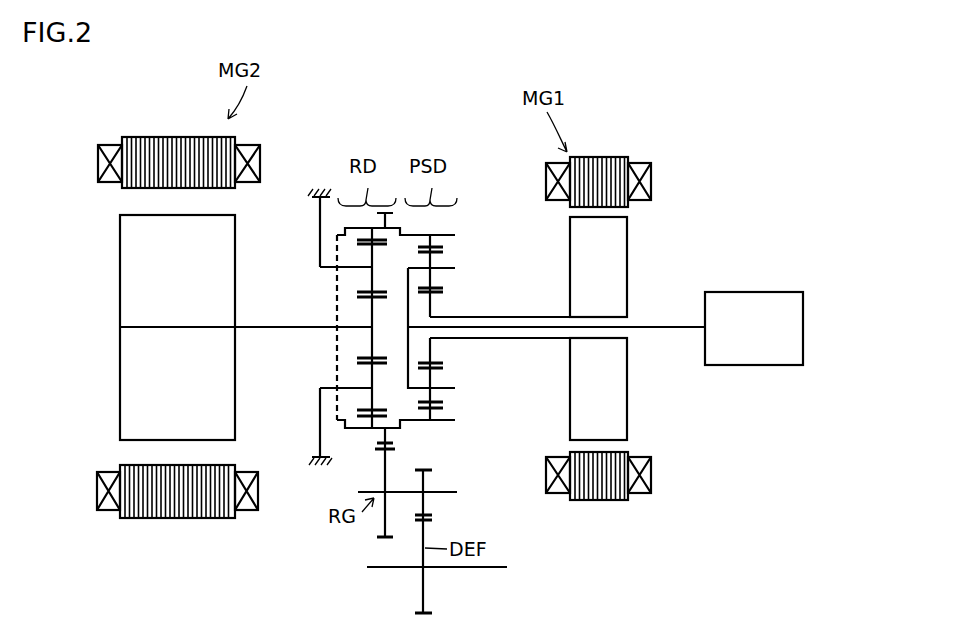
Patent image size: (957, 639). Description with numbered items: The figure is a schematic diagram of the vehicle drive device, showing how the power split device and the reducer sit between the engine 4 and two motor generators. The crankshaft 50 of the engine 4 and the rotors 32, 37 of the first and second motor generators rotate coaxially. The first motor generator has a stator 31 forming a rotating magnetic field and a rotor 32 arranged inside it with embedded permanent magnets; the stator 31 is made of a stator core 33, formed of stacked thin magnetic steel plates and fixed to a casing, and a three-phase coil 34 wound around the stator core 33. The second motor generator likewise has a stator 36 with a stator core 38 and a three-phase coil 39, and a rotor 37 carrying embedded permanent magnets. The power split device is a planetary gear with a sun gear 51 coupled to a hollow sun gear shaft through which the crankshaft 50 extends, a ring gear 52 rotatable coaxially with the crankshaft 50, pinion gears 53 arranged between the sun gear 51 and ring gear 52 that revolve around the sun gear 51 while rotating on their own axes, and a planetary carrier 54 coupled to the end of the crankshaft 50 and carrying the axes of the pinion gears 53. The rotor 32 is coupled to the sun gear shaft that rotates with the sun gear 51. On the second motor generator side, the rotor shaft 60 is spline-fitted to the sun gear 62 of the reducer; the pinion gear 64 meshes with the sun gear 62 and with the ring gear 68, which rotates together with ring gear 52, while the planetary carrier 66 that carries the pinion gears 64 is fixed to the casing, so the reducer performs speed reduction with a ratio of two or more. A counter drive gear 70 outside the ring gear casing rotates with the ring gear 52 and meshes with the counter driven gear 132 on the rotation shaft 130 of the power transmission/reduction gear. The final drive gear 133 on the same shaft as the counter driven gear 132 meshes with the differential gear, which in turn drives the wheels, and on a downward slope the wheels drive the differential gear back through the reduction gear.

The engine 4 is at (787, 292).
The stator 31 is at (667, 486).
The rotor 32 is at (627, 265).
The stator core 33 is at (598, 155).
The three-phase coil 34 is at (641, 161).
The stator 36 is at (273, 502).
The rotor 37 is at (120, 248).
The stator core 38 is at (146, 137).
The three-phase coil 39 is at (108, 143).
The crankshaft 50 is at (665, 332).
The sun gear 51 is at (445, 314).
The ring gear 52 is at (445, 243).
The pinion gears 53 is at (445, 264).
The planetary carrier 54 is at (445, 288).
The rotor shaft 60 is at (263, 331).
The sun gear 62 is at (372, 313).
The pinion gear 64 is at (372, 277).
The planetary carrier 66 is at (320, 265).
The ring gear 68 is at (345, 231).
The counter drive gear 70 is at (390, 436).
The rotation shaft 130 is at (367, 492).
The counter driven gear 132 is at (383, 540).
The final drive gear 133 is at (432, 470).